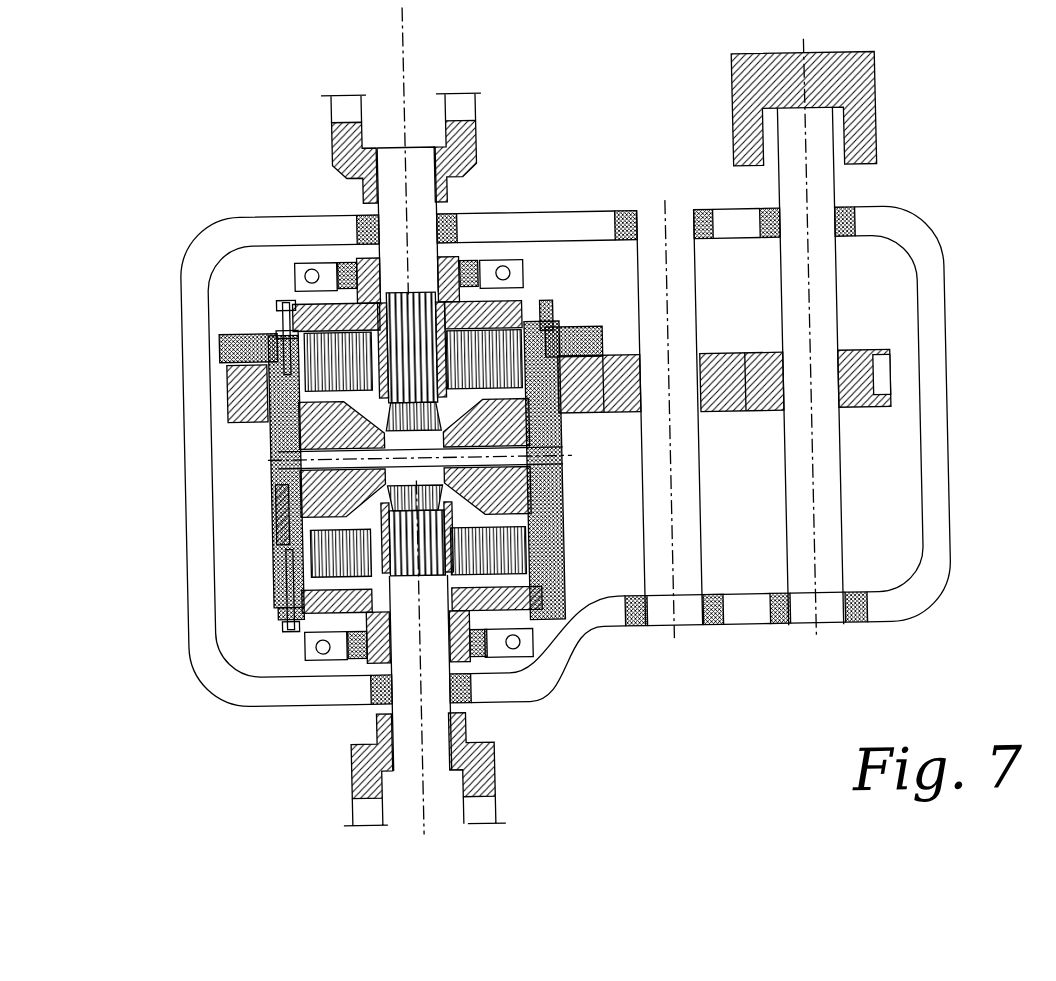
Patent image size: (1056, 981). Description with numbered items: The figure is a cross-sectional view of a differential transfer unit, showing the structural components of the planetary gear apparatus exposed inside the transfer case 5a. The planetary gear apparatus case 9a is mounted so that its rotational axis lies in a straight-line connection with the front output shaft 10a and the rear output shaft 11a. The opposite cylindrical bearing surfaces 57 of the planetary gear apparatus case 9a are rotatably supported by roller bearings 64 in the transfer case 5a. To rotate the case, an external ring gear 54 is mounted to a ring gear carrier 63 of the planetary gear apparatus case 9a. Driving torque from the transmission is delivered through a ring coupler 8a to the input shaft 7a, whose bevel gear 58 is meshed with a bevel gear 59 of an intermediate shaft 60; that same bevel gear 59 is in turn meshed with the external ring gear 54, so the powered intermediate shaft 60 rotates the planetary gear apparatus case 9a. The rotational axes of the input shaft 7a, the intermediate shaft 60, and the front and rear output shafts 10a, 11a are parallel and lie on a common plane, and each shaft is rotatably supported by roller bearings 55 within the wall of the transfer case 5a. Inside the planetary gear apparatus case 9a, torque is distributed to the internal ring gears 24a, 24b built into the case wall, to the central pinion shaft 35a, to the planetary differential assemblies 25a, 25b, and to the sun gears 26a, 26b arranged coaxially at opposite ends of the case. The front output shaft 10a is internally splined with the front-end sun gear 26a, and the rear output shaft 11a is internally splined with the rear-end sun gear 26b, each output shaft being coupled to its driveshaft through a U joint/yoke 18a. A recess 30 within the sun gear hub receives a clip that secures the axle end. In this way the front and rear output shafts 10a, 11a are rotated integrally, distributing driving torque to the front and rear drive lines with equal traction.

The transfer case 5a is at (929, 433).
The input shaft 7a is at (828, 187).
The ring coupler 8a is at (860, 119).
The planetary gear apparatus case 9a is at (266, 511).
The front output shaft 10a is at (398, 173).
The rear output shaft 11a is at (424, 746).
The U joint/yoke 18a is at (465, 135).
The internal ring gear 24a is at (548, 325).
The internal ring gear 24b is at (278, 550).
The planetary differential assembly 25a is at (290, 302).
The planetary differential assembly 25b is at (277, 573).
The sun gear 26a is at (320, 308).
The sun gear 26b is at (274, 597).
The spring 30 is at (286, 330).
The central pinion shaft 35a is at (284, 452).
The external ring gear 54 is at (246, 395).
The roller bearing 55 is at (457, 210).
The cylindrical bearing surface 57 is at (449, 281).
The bevel gear 58 is at (859, 387).
The bevel gear 59 is at (720, 375).
The intermediate shaft 60 is at (673, 235).
The ring gear carrier 63 is at (240, 347).
The roller bearing 64 is at (354, 271).